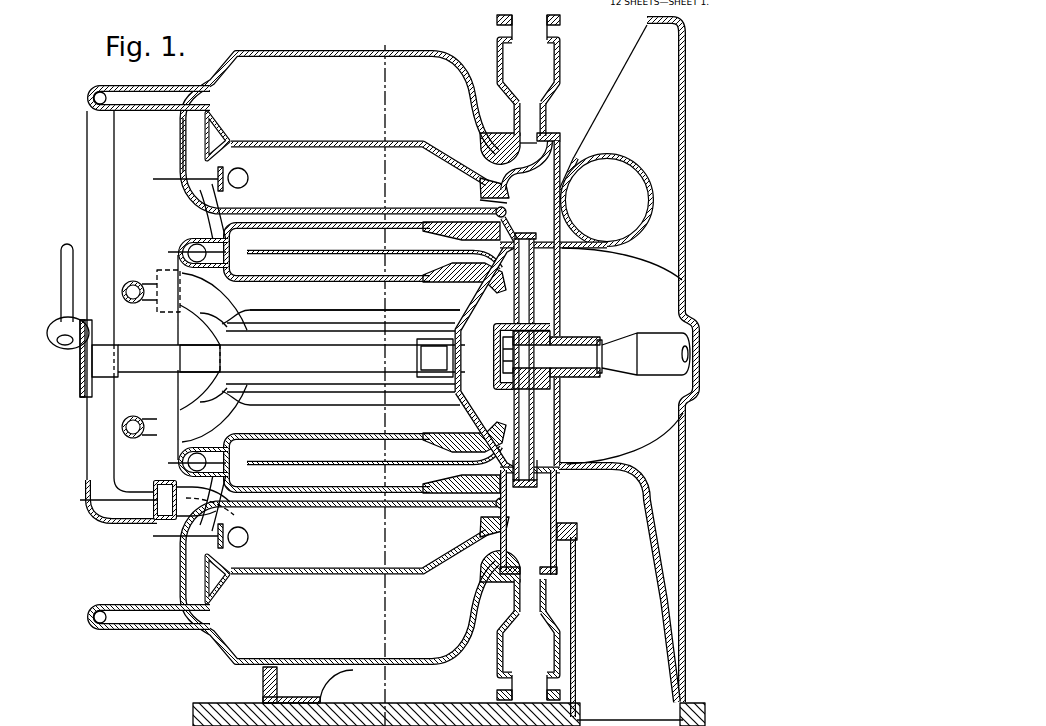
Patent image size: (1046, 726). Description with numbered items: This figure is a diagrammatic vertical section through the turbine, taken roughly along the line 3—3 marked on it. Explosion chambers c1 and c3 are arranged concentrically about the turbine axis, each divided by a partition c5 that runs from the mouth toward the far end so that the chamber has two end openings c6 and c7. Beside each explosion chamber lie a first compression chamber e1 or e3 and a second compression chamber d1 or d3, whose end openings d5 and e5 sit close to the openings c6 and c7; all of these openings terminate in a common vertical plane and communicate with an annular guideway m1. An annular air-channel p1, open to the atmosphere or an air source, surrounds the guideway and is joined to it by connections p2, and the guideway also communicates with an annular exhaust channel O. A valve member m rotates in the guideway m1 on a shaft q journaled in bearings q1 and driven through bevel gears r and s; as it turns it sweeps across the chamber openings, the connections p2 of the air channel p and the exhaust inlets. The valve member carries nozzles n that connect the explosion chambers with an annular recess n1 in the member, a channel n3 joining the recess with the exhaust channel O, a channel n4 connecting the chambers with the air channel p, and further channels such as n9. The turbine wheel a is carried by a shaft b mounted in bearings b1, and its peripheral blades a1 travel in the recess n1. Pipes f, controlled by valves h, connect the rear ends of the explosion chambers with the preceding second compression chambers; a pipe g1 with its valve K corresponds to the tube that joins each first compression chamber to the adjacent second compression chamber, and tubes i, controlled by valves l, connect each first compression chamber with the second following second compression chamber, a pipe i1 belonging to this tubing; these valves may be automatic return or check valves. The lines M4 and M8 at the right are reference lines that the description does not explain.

The section line 3 is at (384, 375).
The first compression chamber e1 is at (340, 113).
The first compression chamber e3 is at (340, 602).
The second compression chamber d1 is at (344, 180).
The second compression chamber d3 is at (344, 534).
The explosion chamber c1 is at (342, 283).
The explosion chamber c3 is at (342, 431).
The partition c5 is at (374, 357).
The end opening c6 is at (460, 281).
The end opening c7 is at (497, 213).
The end opening d5 is at (500, 510).
The end opening e5 is at (493, 538).
The supply pipe i1 is at (142, 103).
The valve K is at (228, 170).
The connecting pipe g1 is at (190, 143).
The tube or pipe f is at (186, 452).
The valve h is at (190, 440).
The tube i is at (93, 450).
The valve l is at (153, 510).
The bevel gear s is at (53, 322).
The bevel gear r is at (102, 330).
The shaft q is at (283, 350).
The bearing q1 is at (438, 373).
The nozzle n is at (486, 357).
The air channel p is at (528, 357).
The annular air-channel p1 is at (535, 26).
The connection p2 is at (597, 570).
The valve member m is at (530, 358).
The annular guideway m1 is at (553, 143).
The channel n4 is at (560, 162).
The channel n9 is at (520, 213).
The annular exhaust channel O is at (607, 200).
The channel n3 is at (550, 228).
The blade a1 is at (560, 262).
The turbine wheel a is at (527, 300).
The annular recess n1 is at (517, 297).
The bearing b1 is at (573, 333).
The shaft b is at (643, 354).
The section line M4 is at (545, 212).
The section line M8 is at (537, 498).